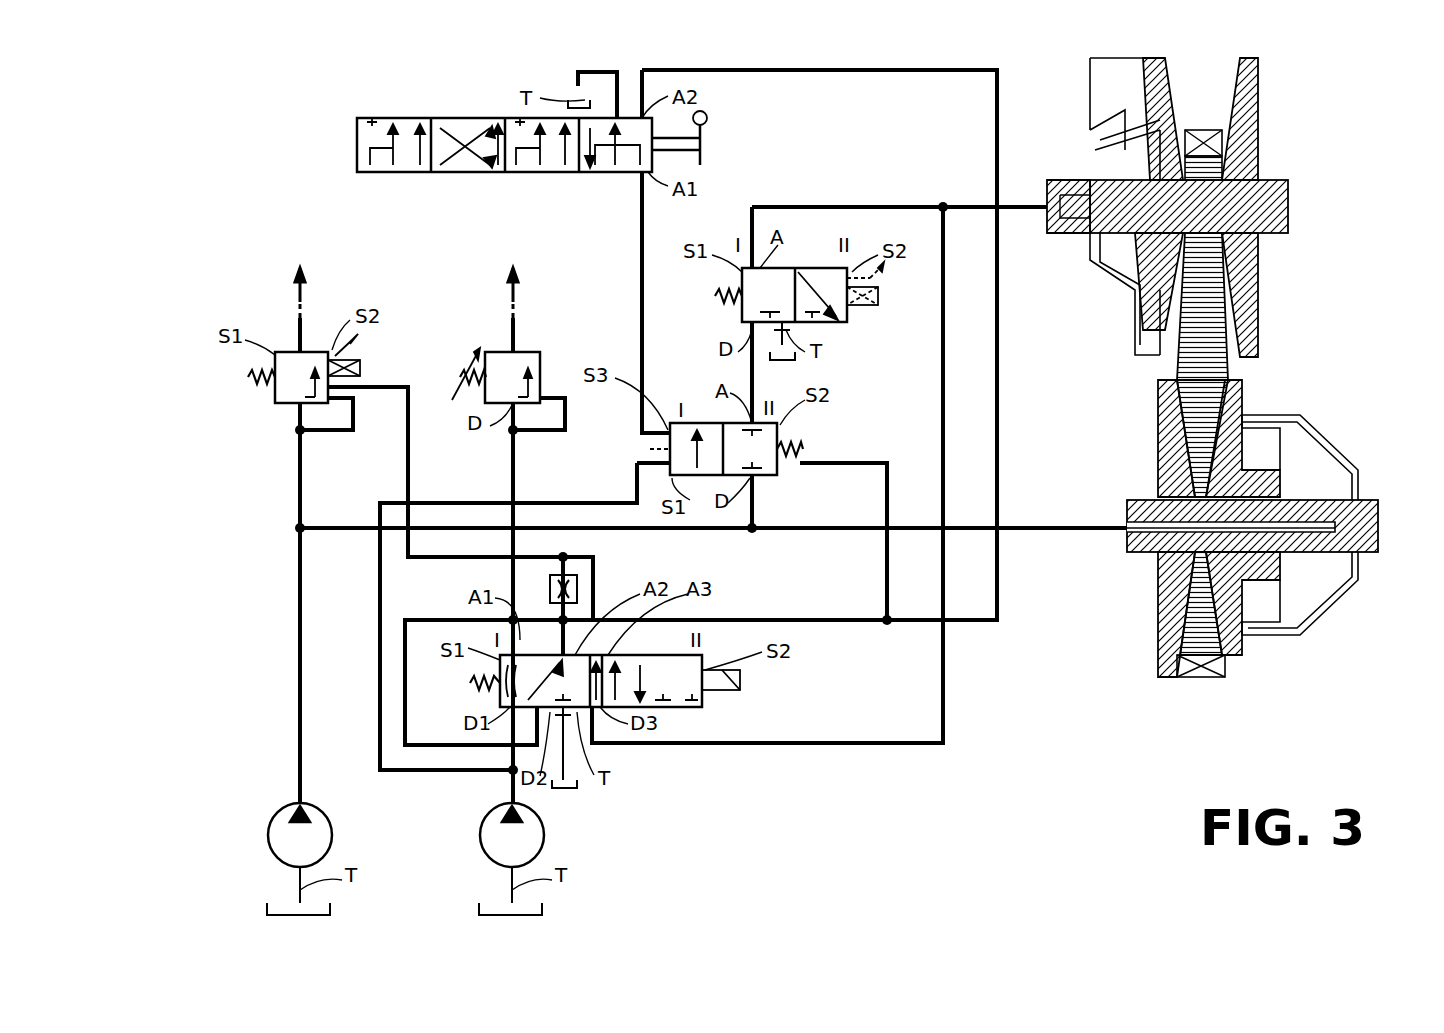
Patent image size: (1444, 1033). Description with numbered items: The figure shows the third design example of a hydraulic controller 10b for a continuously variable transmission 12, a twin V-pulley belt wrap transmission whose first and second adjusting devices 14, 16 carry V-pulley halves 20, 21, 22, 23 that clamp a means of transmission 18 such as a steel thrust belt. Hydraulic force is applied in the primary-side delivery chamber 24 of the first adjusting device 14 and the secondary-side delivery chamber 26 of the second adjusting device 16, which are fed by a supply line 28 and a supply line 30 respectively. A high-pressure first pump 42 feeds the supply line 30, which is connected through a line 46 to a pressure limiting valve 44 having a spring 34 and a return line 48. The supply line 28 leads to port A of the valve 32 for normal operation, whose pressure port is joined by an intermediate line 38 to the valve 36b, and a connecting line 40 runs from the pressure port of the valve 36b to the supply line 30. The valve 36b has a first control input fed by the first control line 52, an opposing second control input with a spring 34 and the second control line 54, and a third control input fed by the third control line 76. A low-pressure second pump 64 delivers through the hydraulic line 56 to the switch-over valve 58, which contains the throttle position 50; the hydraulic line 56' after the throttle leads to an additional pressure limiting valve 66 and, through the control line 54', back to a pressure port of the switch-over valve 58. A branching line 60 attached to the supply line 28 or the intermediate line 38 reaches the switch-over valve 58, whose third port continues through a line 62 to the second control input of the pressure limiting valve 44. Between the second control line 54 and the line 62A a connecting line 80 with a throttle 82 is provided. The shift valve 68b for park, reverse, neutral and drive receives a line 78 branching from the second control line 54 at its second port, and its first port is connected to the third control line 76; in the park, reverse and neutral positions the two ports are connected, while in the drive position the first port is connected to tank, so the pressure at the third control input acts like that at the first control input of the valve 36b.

The hydraulic controller 10b is at (986, 698).
The continuously variable transmission 12 is at (1212, 368).
The first adjusting device 14 is at (1202, 230).
The second adjusting device 16 is at (1240, 529).
The means of transmission 18 is at (1212, 370).
The V-pulley half 20 is at (1160, 360).
The V-pulley half 21 is at (1250, 300).
The V-pulley half 22 is at (1165, 600).
The V-pulley half 23 is at (1240, 628).
The delivery chamber 24 is at (1095, 265).
The delivery chamber 26 is at (1305, 585).
The supply line 28 is at (1018, 205).
The supply line 30 is at (298, 655).
The valve for normal operation 32 is at (848, 330).
The spring 34 is at (246, 377).
The valve 36b is at (790, 420).
The intermediate line 38 is at (750, 372).
The connecting line 40 is at (755, 498).
The first pump 42 is at (270, 835).
The pressure limiting valve 44 is at (280, 340).
The line 46 is at (298, 480).
The return line 48 is at (332, 432).
The throttle position 50 is at (498, 700).
The first control line 52 is at (508, 475).
The second control line 54 is at (854, 541).
The control line 54' is at (346, 636).
The hydraulic line 56 is at (471, 791).
The hydraulic line 56' is at (545, 479).
The switch-over valve 58 is at (716, 706).
The branching line 60 is at (858, 745).
The line 62 is at (412, 440).
The line 62A is at (455, 556).
The second pump 64 is at (482, 835).
The pressure limiting valve 66 is at (497, 345).
The shift valve 68b is at (342, 155).
The third control line 76 is at (640, 340).
The line 78 is at (999, 360).
The connecting line 80 is at (535, 620).
The throttle 82 is at (578, 590).